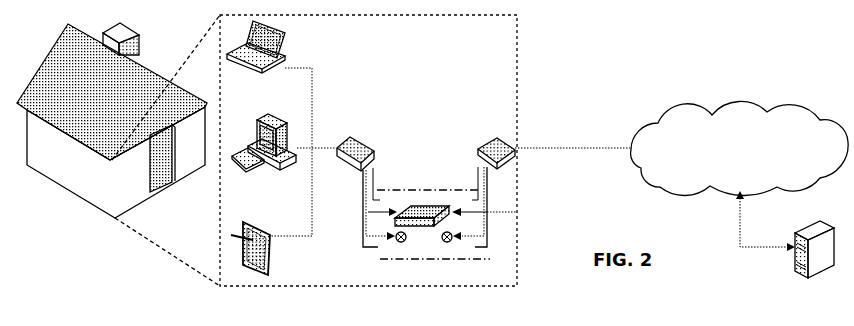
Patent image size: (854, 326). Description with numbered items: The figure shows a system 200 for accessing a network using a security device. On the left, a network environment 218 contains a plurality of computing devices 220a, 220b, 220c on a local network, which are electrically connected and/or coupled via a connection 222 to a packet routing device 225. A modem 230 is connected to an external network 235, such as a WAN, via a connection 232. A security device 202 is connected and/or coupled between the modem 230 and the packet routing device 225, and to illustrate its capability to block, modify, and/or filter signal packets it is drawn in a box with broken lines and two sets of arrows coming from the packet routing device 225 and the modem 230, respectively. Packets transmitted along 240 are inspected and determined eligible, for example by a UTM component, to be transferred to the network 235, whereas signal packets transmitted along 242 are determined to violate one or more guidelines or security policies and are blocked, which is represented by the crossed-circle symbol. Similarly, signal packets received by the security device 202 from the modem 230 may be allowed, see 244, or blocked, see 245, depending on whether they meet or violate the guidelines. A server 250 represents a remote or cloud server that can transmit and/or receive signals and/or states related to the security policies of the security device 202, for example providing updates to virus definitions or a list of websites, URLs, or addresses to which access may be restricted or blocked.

The system 200 is at (607, 71).
The network environment 218 is at (218, 53).
The computing device 220a is at (284, 60).
The computing device 220b is at (256, 122).
The computing device 220c is at (268, 233).
The connection 222 is at (326, 148).
The packet routing device 225 is at (371, 146).
The modem 230 is at (497, 140).
The packet transmission path (allowed) 240 is at (388, 207).
The security device 202 is at (437, 205).
The packet transmission path (blocked) 242 is at (378, 249).
The allowed received packets 244 is at (517, 212).
The blocked received packets 245 is at (489, 248).
The connection 232 is at (575, 147).
The external network 235 is at (727, 171).
The server 250 is at (793, 268).